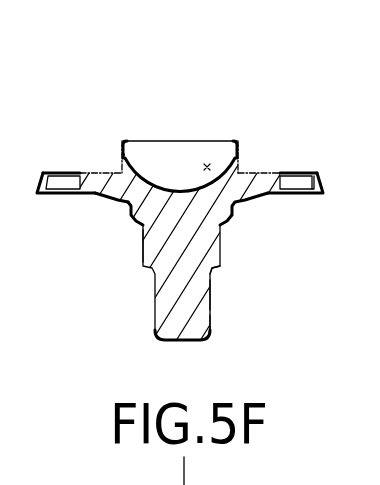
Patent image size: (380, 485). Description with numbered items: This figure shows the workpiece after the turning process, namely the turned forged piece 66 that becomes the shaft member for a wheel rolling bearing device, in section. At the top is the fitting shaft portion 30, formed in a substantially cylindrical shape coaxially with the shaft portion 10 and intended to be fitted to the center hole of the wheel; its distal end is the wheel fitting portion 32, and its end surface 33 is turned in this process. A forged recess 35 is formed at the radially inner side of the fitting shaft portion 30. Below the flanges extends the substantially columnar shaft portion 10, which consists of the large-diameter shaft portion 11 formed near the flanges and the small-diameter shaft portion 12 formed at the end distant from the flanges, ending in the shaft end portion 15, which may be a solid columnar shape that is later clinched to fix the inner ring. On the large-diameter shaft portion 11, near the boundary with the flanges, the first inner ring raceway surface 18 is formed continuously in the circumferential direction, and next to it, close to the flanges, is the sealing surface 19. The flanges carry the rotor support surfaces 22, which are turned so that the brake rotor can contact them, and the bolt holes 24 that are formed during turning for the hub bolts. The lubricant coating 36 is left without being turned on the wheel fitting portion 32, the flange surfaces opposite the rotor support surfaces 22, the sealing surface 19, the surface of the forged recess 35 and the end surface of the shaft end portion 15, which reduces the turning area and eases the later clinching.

The shaft portion 10 is at (290, 264).
The large-diameter shaft portion 11 is at (218, 266).
The small-diameter shaft portion 12 is at (211, 293).
The shaft end portion 15 is at (209, 327).
The first inner ring raceway surface 18 is at (142, 224).
The sealing surface 19 is at (131, 211).
The rotor support surface 22 is at (98, 172).
The bolt hole 24 is at (63, 183).
The fitting shaft portion 30 is at (180, 174).
The wheel fitting portion 32 is at (240, 140).
The end surface 33 is at (123, 140).
The forged recess 35 is at (207, 164).
The lubricant coating 36 is at (121, 170).
The turned forged piece 66 is at (161, 132).